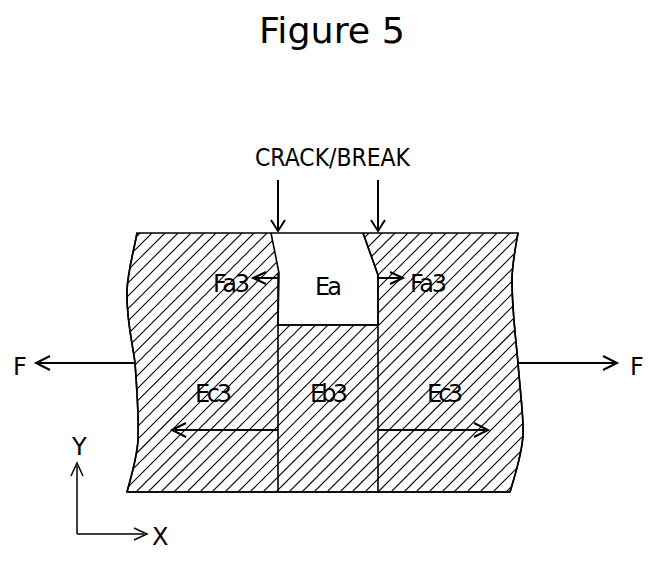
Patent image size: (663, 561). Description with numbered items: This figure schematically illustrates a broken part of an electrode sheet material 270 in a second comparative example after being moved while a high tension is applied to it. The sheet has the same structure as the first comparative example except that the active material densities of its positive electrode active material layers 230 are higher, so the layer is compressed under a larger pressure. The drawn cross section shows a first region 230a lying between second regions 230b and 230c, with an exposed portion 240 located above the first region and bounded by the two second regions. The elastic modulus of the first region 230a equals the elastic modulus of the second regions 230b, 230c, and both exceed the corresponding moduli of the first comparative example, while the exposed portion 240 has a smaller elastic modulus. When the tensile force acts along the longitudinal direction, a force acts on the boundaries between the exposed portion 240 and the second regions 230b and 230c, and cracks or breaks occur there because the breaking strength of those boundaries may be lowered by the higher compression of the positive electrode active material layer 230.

The positive electrode active material layer 230 is at (188, 240).
The first region 230a is at (330, 479).
The second region 230b is at (143, 267).
The second region 230c is at (497, 262).
The exposed portion 240 is at (325, 253).
The electrode sheet material 270 is at (467, 224).